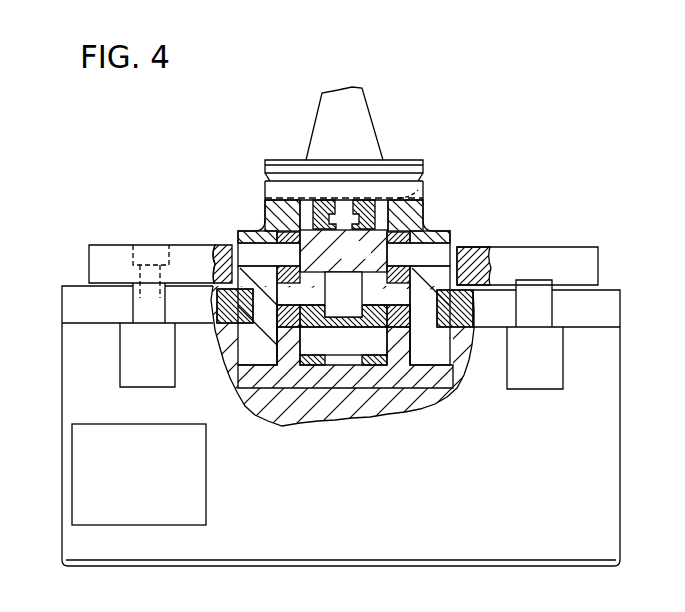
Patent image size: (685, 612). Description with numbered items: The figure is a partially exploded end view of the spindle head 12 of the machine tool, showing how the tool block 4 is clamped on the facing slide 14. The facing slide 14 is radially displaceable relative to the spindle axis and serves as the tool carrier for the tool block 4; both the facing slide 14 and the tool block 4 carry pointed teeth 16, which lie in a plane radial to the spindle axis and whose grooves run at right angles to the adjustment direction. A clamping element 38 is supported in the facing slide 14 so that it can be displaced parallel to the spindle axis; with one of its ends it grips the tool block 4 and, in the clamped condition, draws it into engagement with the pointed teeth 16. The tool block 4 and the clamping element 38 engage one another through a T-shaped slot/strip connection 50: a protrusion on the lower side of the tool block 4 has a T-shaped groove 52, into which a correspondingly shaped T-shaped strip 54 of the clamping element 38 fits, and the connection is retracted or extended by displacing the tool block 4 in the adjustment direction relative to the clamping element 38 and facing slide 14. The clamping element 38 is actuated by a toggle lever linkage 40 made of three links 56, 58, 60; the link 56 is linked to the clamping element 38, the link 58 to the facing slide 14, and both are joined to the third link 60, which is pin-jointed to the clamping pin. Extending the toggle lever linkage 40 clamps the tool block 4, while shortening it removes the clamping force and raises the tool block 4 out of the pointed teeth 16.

The tool block 4 is at (376, 104).
The spindle head 12 is at (619, 458).
The facing slide 14 is at (447, 231).
The pointed teeth 16 is at (424, 189).
The clamping element 38 is at (309, 378).
The toggle lever linkage 40 is at (272, 259).
The T-shaped slot/strip connection 50 is at (327, 216).
The T-shaped groove 52 is at (355, 217).
The T-shaped strip 54 is at (337, 228).
The link 56 is at (373, 364).
The link 58 is at (410, 312).
The third link 60 is at (338, 312).